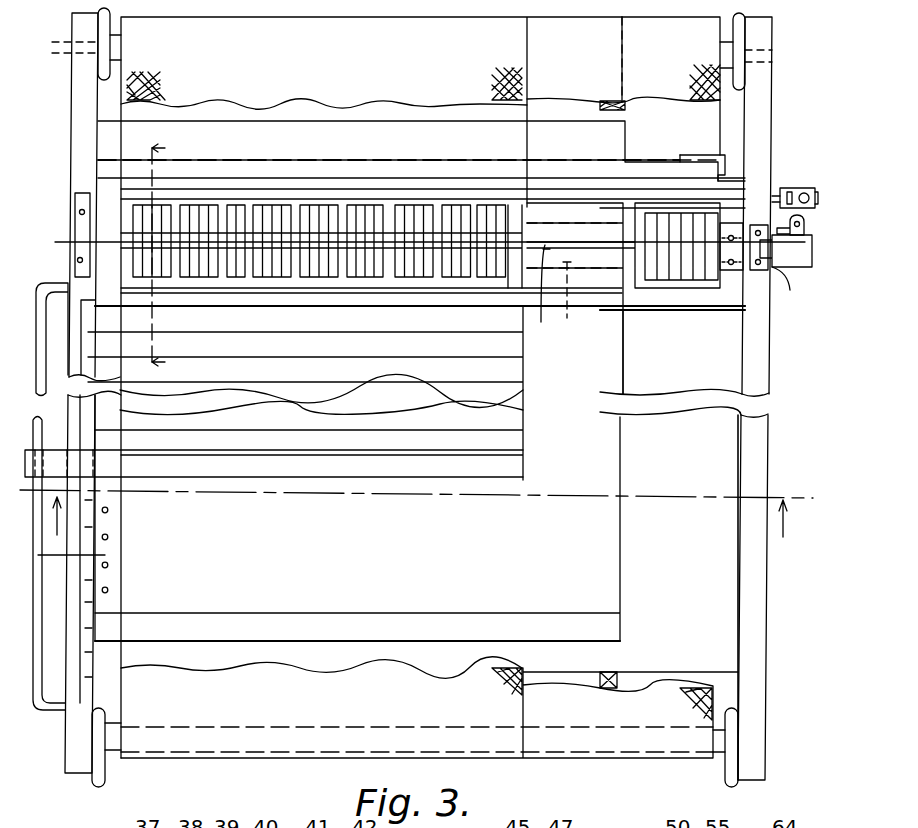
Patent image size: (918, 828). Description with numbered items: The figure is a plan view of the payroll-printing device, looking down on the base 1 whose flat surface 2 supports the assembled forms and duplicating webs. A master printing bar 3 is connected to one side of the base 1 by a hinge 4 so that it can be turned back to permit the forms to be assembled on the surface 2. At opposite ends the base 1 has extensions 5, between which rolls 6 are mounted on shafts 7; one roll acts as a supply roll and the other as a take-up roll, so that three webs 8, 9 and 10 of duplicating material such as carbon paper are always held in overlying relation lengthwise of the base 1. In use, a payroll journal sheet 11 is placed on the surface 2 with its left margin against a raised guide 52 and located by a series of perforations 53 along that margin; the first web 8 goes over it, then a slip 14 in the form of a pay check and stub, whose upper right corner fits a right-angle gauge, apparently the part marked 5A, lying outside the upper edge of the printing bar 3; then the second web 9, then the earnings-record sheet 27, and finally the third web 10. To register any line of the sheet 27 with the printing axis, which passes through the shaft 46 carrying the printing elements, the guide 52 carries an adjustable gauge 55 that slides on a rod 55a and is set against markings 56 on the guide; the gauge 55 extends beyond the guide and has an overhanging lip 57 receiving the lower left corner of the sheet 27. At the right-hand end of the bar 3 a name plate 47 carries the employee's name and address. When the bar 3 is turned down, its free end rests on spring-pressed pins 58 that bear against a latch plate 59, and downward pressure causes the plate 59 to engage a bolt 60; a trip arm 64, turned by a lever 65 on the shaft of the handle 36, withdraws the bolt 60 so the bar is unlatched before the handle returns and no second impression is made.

The base 1 is at (760, 581).
The flat surface 2 is at (726, 386).
The master printing bar 3 is at (650, 310).
The hinge 4 is at (80, 236).
The extensions 5 is at (80, 76).
The step projection 5A is at (704, 155).
The rolls 6 is at (745, 105).
The shafts 7 is at (788, 66).
The web 8 is at (622, 108).
The web 9 is at (672, 720).
The web 10 is at (442, 93).
The payroll journal sheet 11 is at (607, 482).
The printed slip 14 is at (663, 172).
The printed sheet 27 is at (512, 447).
The handle 36 is at (803, 188).
The shaft 46 is at (541, 298).
The name plate 47 is at (574, 303).
The raised guide 52 is at (83, 693).
The perforations 53 is at (108, 590).
The adjustable gauge 55 is at (90, 470).
The rod 55a is at (105, 555).
The markings 56 is at (88, 426).
The overhanging lip 57 is at (100, 450).
The spring pressed pins 58 is at (765, 300).
The latch plate 59 is at (749, 282).
The bolt 60 is at (772, 270).
The trip arm 64 is at (784, 228).
The lever 65 is at (788, 190).